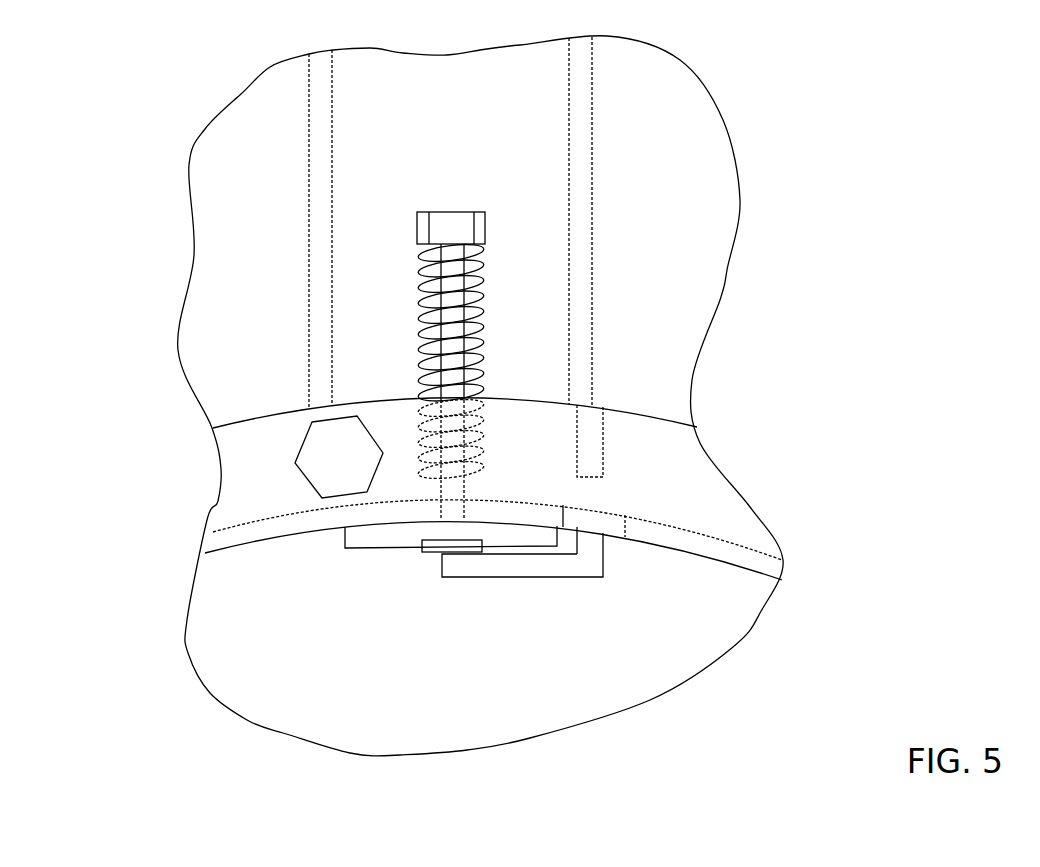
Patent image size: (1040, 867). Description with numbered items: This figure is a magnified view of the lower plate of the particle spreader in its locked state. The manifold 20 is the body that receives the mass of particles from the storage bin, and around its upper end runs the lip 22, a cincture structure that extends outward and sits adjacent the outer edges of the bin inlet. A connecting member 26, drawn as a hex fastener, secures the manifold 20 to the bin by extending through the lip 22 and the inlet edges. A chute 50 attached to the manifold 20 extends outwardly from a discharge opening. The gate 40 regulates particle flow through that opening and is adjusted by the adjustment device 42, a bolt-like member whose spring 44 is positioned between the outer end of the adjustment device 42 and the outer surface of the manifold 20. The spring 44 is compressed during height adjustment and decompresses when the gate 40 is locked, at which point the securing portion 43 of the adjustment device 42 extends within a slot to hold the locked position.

The manifold 20 is at (235, 550).
The lip 22 is at (683, 462).
The connecting member 26 is at (302, 475).
The gate 40 is at (368, 550).
The adjustment device 42 is at (440, 230).
The securing portion 43 is at (600, 562).
The spring 44 is at (483, 297).
The chute 50 is at (309, 154).